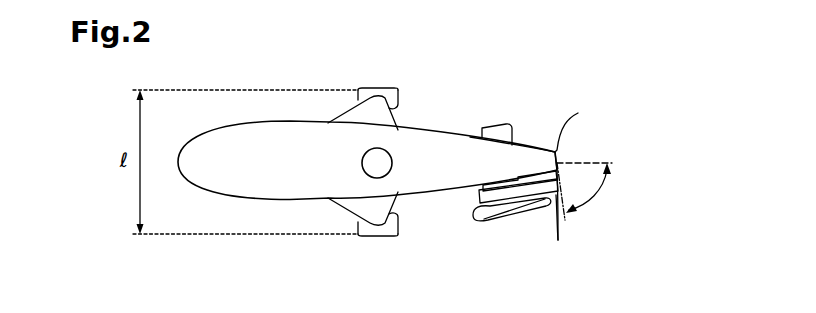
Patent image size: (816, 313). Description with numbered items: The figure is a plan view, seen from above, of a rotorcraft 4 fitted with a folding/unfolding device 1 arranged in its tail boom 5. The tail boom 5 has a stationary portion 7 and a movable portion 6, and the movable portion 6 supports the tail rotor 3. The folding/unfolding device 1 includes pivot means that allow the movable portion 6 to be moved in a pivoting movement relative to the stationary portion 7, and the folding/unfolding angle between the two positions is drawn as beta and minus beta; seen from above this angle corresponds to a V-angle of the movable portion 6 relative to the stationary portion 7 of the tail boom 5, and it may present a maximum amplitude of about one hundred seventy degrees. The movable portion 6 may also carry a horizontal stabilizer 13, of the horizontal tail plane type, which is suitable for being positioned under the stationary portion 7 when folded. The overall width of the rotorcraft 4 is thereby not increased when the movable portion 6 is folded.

The folding/unfolding device 1 is at (585, 142).
The rotorcraft 4 is at (305, 109).
The tail boom 5 is at (473, 126).
The horizontal stabilizer 13 is at (500, 131).
The stationary portion 7 is at (578, 113).
The tail rotor 3 is at (477, 218).
The movable portion 6 is at (555, 240).